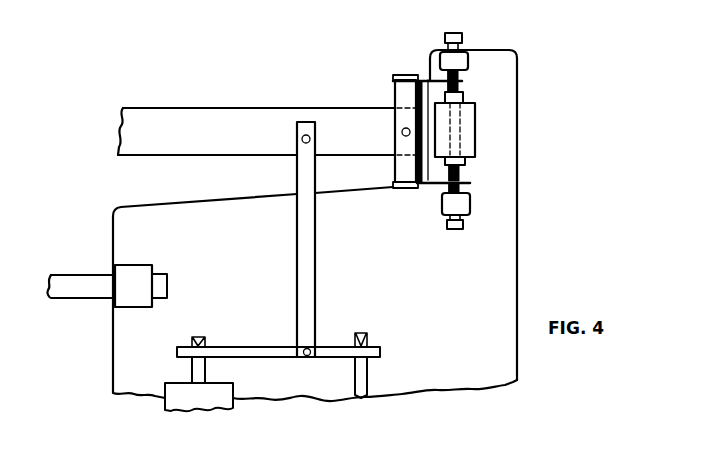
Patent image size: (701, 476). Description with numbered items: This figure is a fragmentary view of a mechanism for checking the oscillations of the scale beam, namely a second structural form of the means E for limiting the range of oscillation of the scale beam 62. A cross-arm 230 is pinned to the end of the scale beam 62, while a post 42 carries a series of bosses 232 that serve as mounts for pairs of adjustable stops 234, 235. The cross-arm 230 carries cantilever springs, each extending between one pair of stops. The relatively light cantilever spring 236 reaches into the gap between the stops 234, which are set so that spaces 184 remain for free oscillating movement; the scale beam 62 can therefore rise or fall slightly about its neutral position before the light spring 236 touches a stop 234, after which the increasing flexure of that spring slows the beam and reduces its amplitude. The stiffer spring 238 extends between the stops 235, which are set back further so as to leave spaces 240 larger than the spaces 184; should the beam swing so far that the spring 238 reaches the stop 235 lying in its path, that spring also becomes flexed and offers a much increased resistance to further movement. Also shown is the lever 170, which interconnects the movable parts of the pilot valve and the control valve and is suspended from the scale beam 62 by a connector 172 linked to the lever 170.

The scale beam 62 is at (202, 118).
The connector 172 is at (303, 240).
The lever 170 is at (250, 352).
The post 42 is at (440, 286).
The means for limiting the range of oscillation of the scale beam E is at (523, 54).
The cross-arm 230 is at (399, 96).
The bosses 232 is at (458, 53).
The adjustable stops 234 is at (440, 74).
The spaces 184 is at (462, 79).
The cantilever spring 236 is at (459, 81).
The cantilever spring 238 is at (470, 183).
The adjustable stops 235 is at (463, 172).
The spaces 240 is at (463, 182).